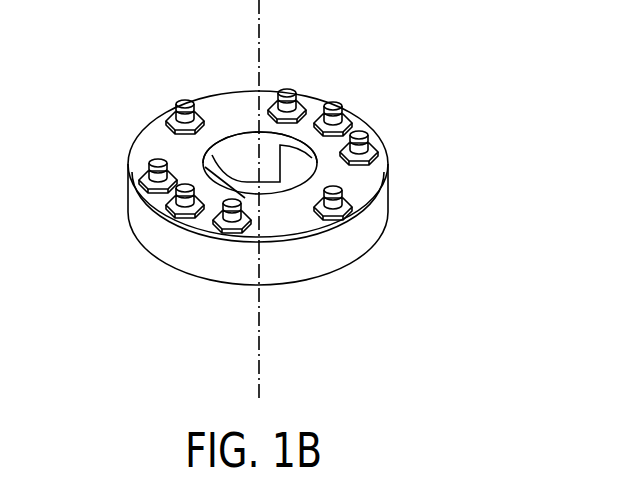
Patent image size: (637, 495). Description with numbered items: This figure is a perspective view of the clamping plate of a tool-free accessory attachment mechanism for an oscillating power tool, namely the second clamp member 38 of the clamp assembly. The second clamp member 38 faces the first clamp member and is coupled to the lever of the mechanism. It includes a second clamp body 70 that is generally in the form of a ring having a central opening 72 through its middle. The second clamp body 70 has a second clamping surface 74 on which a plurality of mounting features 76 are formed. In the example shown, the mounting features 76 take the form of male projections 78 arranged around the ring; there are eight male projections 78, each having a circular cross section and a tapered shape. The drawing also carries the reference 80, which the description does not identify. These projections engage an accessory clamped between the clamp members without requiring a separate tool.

The second clamp member 38 is at (212, 260).
The second clamp body 70 is at (272, 268).
The central opening 72 is at (288, 163).
The second clamping surface 74 is at (243, 150).
The mounting features 76 is at (178, 113).
The male projections 78 is at (349, 118).
The wheel hub assembly 80 is at (138, 255).